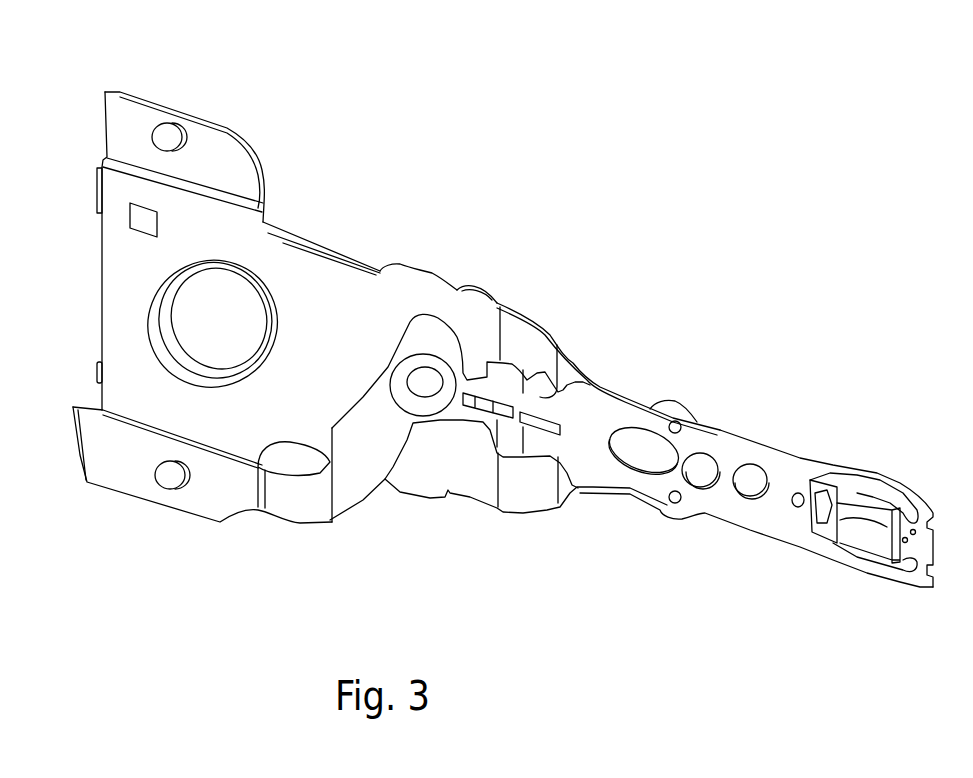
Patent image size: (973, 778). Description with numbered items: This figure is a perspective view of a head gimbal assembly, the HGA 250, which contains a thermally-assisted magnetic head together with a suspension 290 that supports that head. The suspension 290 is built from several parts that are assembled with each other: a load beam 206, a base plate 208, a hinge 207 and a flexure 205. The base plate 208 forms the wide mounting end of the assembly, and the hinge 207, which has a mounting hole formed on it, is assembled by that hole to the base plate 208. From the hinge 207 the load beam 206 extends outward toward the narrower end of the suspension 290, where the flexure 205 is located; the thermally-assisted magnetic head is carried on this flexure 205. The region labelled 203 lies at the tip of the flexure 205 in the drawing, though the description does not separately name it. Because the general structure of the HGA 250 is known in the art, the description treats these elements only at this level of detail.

The HGA 250 is at (509, 302).
The suspension 290 is at (737, 215).
The base plate 208 is at (472, 288).
The hinge 207 is at (516, 328).
The load beam 206 is at (567, 373).
The flexure 205 is at (710, 445).
The gimbal tongue 203 is at (858, 532).